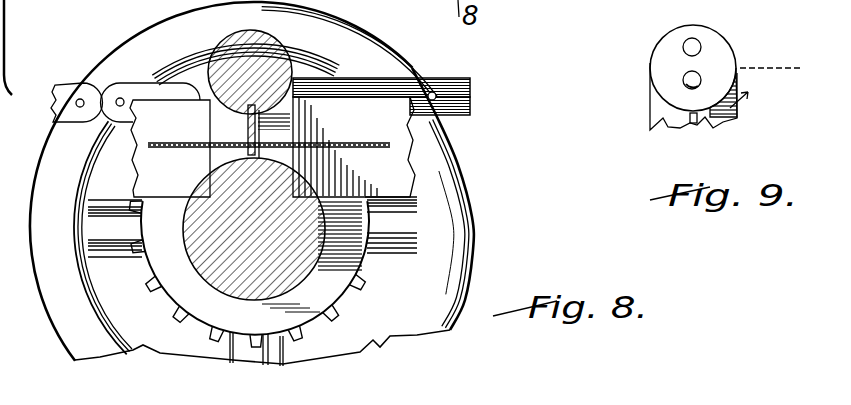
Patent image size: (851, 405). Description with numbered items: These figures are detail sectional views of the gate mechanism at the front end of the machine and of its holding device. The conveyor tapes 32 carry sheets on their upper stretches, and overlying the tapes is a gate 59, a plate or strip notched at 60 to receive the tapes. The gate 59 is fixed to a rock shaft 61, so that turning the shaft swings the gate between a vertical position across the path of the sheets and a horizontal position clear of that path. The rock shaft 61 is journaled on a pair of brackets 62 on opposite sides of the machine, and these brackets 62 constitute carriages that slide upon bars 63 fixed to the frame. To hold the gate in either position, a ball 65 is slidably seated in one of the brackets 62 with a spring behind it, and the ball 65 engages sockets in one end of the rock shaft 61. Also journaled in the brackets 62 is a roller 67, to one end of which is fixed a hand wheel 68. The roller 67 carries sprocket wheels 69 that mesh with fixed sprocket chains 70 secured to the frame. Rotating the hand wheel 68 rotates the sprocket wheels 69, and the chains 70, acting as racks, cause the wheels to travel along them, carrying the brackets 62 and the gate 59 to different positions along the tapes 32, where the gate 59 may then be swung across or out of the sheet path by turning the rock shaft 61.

In FIG. 8, the conveyor tapes 32 is at (199, 145).
In FIG. 8, the gate 59 is at (247, 122).
In FIG. 9, the gate 59 is at (789, 68).
In FIG. 8, the notches 60 is at (250, 134).
In FIG. 8, the rock shaft 61 is at (268, 48).
In FIG. 9, the brackets 62 is at (650, 62).
In FIG. 8, the bars 63 is at (354, 147).
In FIG. 9, the ball 65 is at (700, 73).
In FIG. 8, the roller 67 is at (190, 258).
In FIG. 8, the hand wheel 68 is at (8, 30).
In FIG. 8, the sprocket wheels 69 is at (170, 310).
In FIG. 8, the sprocket chains 70 is at (458, 86).